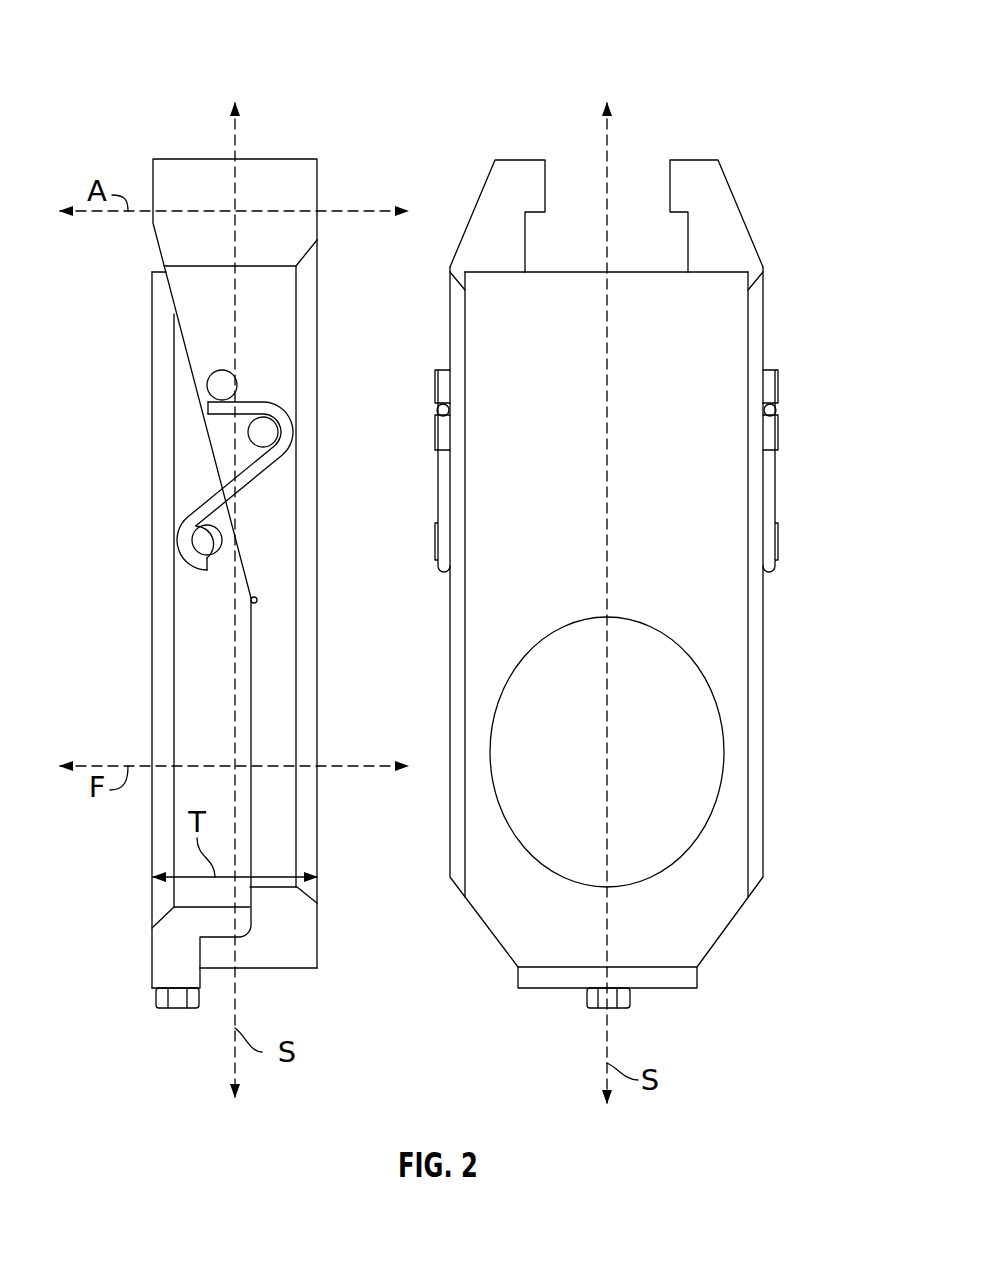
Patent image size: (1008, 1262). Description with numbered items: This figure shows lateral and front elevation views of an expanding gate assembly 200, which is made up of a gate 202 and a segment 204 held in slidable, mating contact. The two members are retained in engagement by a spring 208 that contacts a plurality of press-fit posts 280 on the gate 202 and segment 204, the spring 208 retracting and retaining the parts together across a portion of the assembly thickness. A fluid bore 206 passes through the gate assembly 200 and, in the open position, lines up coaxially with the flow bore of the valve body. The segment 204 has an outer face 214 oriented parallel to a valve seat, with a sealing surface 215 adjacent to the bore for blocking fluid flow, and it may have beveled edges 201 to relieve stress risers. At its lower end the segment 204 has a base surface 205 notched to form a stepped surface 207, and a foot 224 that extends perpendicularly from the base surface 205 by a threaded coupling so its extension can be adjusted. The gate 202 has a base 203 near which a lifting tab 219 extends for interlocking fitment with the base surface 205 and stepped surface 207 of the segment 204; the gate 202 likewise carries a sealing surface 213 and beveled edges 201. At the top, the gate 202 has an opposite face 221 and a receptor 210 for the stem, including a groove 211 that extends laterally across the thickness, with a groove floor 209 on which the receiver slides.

The gate assembly 200 is at (130, 37).
The beveled edges 201 is at (305, 818).
The gate 202 is at (277, 535).
The base 203 is at (333, 1030).
The segment 204 is at (185, 667).
The base surface 205 is at (162, 967).
The fluid bore 206 is at (685, 772).
The stepped surface 207 is at (227, 940).
The spring 208 is at (207, 405).
The groove floor 209 is at (595, 268).
The receptor 210 is at (622, 242).
The groove 211 is at (573, 175).
The sealing surface 213 is at (308, 587).
The outer face 214 is at (150, 690).
The sealing surface 215 is at (650, 405).
The lifting tab 219 is at (208, 958).
The opposite face 221 is at (152, 172).
The foot 224 is at (177, 1012).
The posts 280 is at (207, 383).